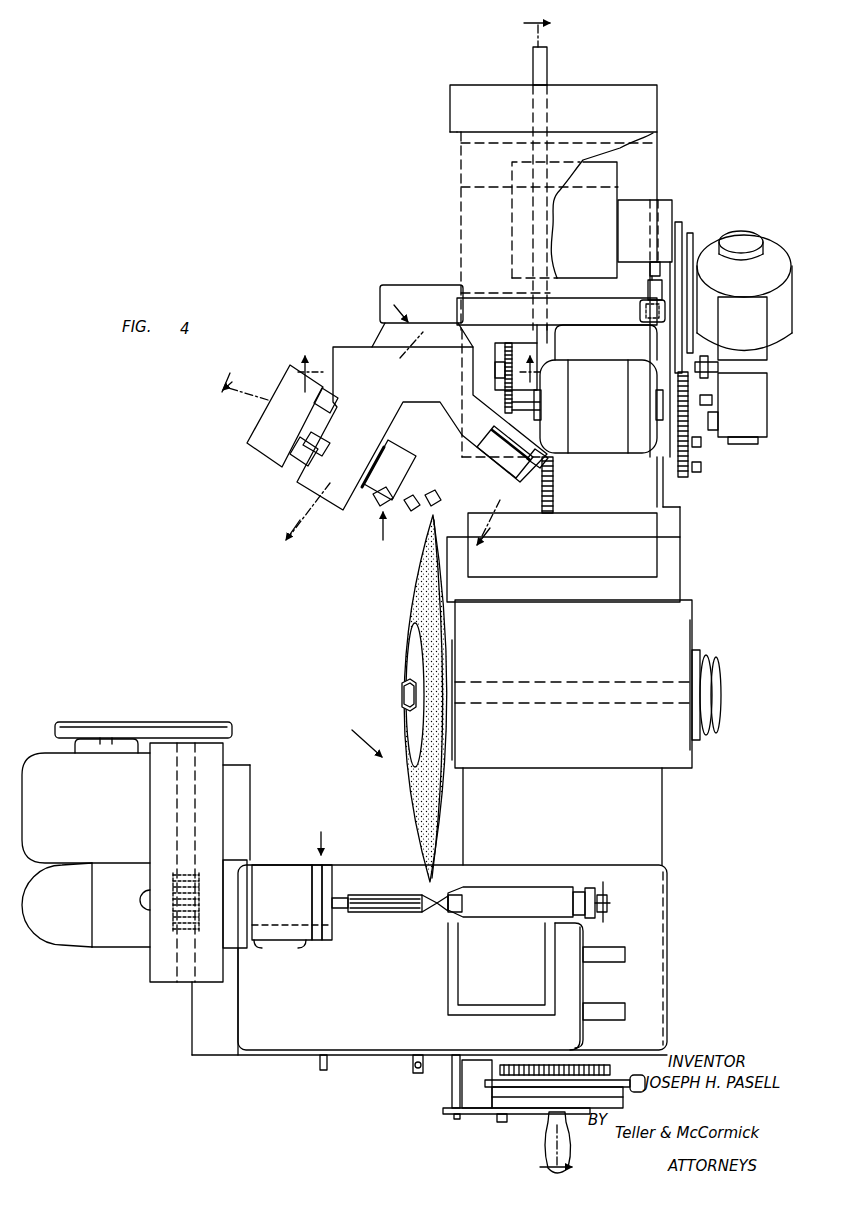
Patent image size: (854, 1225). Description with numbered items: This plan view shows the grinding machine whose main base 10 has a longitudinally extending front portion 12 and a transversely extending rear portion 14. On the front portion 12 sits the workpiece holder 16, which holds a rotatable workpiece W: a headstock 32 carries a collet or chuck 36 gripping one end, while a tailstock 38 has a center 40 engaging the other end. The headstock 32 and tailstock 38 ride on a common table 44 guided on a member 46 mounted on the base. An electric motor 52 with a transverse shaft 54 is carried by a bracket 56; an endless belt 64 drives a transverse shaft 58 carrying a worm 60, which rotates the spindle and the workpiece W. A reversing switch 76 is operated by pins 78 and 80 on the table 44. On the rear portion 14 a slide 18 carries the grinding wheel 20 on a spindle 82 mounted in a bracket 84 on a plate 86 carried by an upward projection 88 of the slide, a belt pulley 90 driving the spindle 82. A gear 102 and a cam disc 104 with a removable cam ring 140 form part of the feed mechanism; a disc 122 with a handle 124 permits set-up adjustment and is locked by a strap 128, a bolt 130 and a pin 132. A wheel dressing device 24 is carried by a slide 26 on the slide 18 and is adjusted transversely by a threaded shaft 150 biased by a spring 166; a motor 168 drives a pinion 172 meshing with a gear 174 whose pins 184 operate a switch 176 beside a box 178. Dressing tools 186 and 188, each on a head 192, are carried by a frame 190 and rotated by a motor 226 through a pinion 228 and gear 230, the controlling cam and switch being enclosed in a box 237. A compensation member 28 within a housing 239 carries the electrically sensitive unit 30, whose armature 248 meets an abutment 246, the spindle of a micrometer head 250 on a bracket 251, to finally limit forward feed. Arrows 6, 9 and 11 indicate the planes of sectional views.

The section line 6- 6 is at (538, 596).
The section line 9- 9 is at (355, 469).
The main base 10 is at (374, 521).
The section line 11- 11 is at (415, 374).
The front portion 12 is at (238, 1056).
The rear portion 14 is at (660, 187).
The workpiece holder 16 is at (317, 835).
The support or slide 18 is at (663, 490).
The cutting tool 20 is at (413, 589).
The wheel dressing device 24 is at (375, 536).
The slide 26 is at (585, 337).
The compensation member 28 is at (609, 182).
The feed limiting device 30 is at (680, 222).
The headstock 32 is at (270, 880).
The collet or chuck 36 is at (330, 876).
The tailstock 38 is at (520, 890).
The center 40 is at (441, 898).
The slide or table 44 is at (372, 997).
The member 46 is at (660, 926).
The electric motor 52 is at (42, 760).
The transverse shaft 54 is at (95, 740).
The bracket 56 is at (103, 938).
The transverse shaft 58 is at (175, 815).
The worm 60 is at (175, 885).
The endless belt 64 is at (133, 727).
The switch 76 is at (424, 1075).
The pin 78 is at (327, 1065).
The pin 80 is at (425, 1066).
The spindle 82 is at (580, 681).
The bracket 84 is at (680, 630).
The plate 86 is at (565, 593).
The upward projection 88 is at (616, 552).
The belt pulley 90 is at (718, 672).
The gear 102 is at (600, 1064).
The cam disc 104 is at (540, 1065).
The disc 122 is at (497, 1100).
The handle 124 is at (549, 1141).
The strap 128 is at (477, 1115).
The bolt 130 is at (503, 1124).
The pin 132 is at (456, 1120).
The cam ring 140 is at (485, 1083).
The transverse shaft 150 is at (533, 80).
The spring 166 is at (555, 470).
The motor 168 is at (780, 258).
The pinion 172 is at (702, 370).
The gear 174 is at (690, 480).
The switch 176 is at (712, 424).
The box 178 is at (758, 430).
The pins 184 is at (706, 460).
The dressing tool 186 is at (410, 507).
The dressing tool 188 is at (432, 505).
The frame 190 is at (366, 360).
The head 192 is at (432, 462).
The motor 226 is at (608, 380).
The pinion 228 is at (512, 415).
The gear 230 is at (508, 341).
The box 237 is at (263, 444).
The housing 239 is at (503, 232).
The abutment 246 is at (652, 293).
The armature 248 is at (651, 268).
The micrometer head 250 is at (650, 292).
The bracket 251 is at (652, 315).
The workpiece W is at (375, 887).